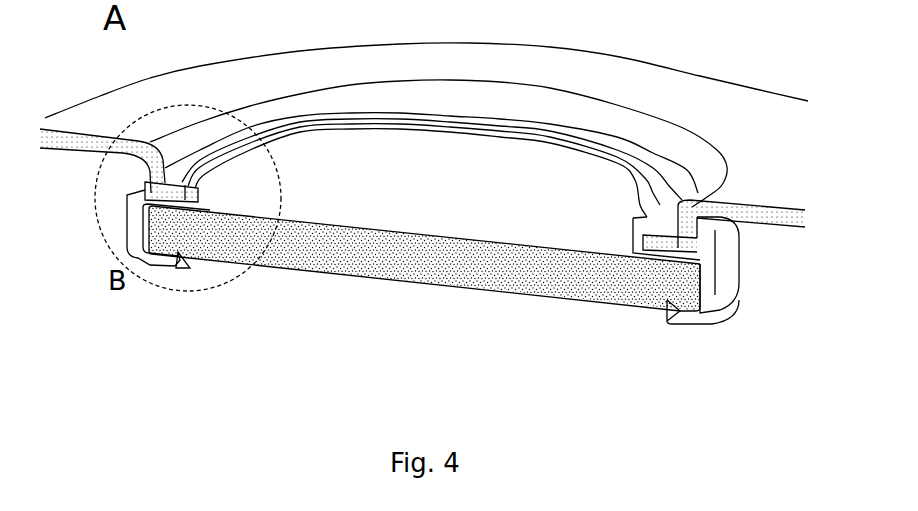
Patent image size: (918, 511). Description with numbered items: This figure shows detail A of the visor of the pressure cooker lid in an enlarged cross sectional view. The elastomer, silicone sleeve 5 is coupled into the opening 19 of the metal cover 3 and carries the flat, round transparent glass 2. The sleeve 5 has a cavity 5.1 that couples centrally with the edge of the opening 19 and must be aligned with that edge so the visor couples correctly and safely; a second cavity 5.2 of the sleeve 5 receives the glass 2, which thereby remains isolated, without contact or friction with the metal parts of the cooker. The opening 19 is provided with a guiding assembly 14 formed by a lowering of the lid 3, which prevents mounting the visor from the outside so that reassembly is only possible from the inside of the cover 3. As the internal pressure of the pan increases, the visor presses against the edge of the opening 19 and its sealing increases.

The flat glass 2 is at (468, 260).
The cover 3 is at (75, 130).
The elastomer material sleeve 5 is at (137, 233).
The cavity 5.1 is at (193, 192).
The cavity 5.2 is at (685, 300).
The guiding assembly 14 is at (700, 252).
The opening 19 is at (178, 182).